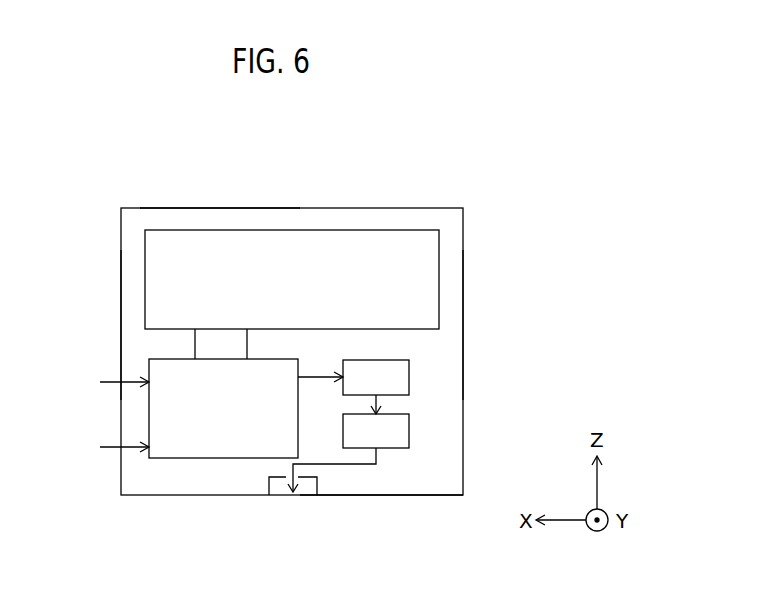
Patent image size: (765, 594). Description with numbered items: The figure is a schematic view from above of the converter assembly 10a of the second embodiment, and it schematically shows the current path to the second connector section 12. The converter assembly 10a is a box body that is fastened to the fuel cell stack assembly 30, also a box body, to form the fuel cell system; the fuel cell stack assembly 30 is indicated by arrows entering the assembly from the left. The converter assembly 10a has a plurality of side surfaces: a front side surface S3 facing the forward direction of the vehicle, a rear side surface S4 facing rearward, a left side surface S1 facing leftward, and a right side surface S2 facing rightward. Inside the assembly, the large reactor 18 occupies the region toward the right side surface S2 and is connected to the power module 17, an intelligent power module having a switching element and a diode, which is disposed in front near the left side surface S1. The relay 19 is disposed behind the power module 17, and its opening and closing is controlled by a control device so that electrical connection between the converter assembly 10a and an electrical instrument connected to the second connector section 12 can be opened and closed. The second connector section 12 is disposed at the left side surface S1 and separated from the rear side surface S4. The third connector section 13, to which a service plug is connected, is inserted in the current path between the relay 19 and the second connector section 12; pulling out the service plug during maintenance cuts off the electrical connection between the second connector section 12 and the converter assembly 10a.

The converter assembly 10a is at (120, 278).
The second connector section 12 is at (268, 479).
The third connector section 13 is at (388, 442).
The power module 17 is at (234, 420).
The reactor 18 is at (302, 290).
The relay 19 is at (388, 388).
The fuel cell stack assembly 30 is at (110, 415).
The left side surface S1 is at (432, 496).
The right side surface S2 is at (152, 208).
The front side surface S3 is at (121, 333).
The rear side surface S4 is at (463, 333).